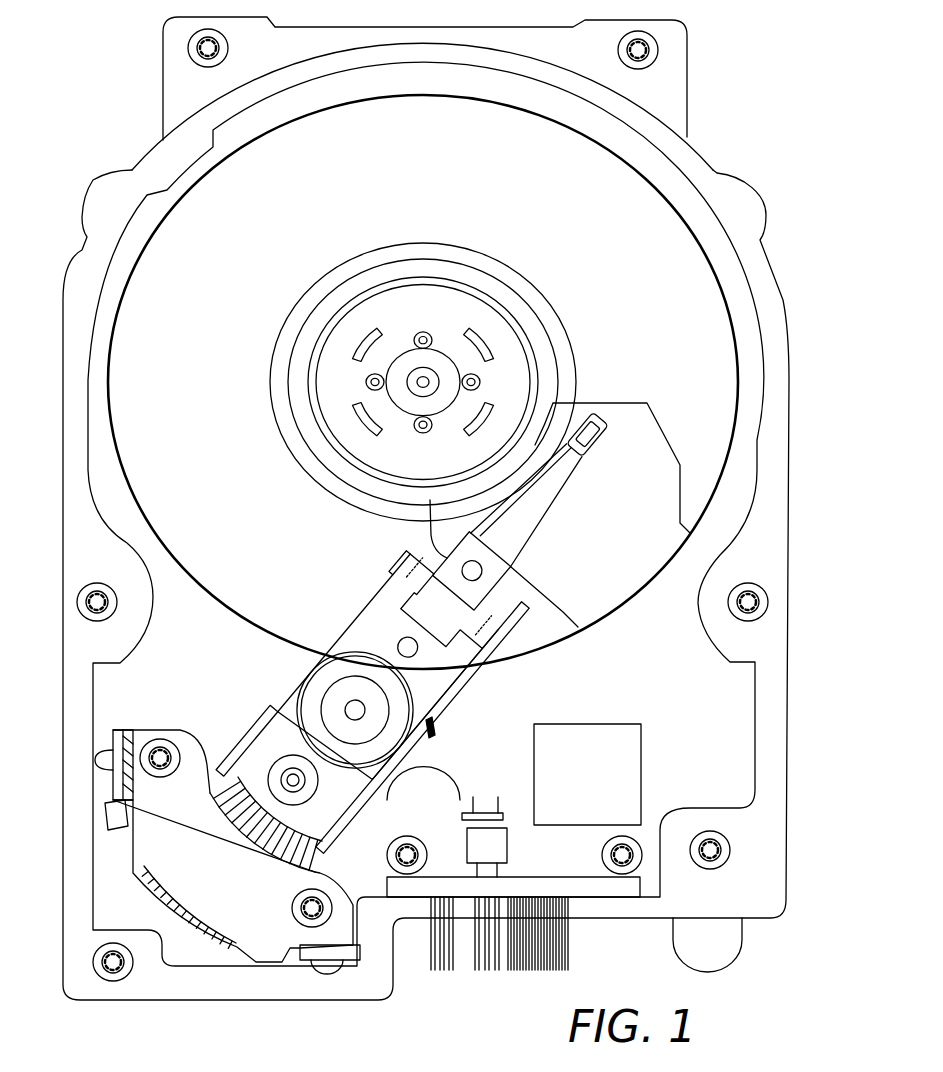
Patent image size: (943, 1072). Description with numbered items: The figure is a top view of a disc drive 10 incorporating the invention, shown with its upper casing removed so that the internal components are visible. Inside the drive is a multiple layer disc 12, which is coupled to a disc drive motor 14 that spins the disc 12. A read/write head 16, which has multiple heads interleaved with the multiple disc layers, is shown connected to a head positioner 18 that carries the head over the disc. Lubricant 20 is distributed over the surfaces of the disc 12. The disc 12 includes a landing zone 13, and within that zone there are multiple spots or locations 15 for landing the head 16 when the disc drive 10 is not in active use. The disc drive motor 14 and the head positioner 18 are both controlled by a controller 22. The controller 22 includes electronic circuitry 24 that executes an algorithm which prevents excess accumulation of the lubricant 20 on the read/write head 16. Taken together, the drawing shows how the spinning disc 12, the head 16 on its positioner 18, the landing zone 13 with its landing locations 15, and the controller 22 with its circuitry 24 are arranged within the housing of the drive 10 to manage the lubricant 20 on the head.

The disc drive 10 is at (722, 113).
The multiple layer disc 12 is at (697, 425).
The landing zone 13 is at (418, 258).
The disc drive motor 14 is at (390, 452).
The spots or locations 15 is at (293, 450).
The read/write head 16 is at (610, 443).
The head positioner 18 is at (270, 683).
The lubricant 20 is at (217, 232).
The controller 22 is at (730, 737).
The electronic circuitry 24 is at (604, 798).